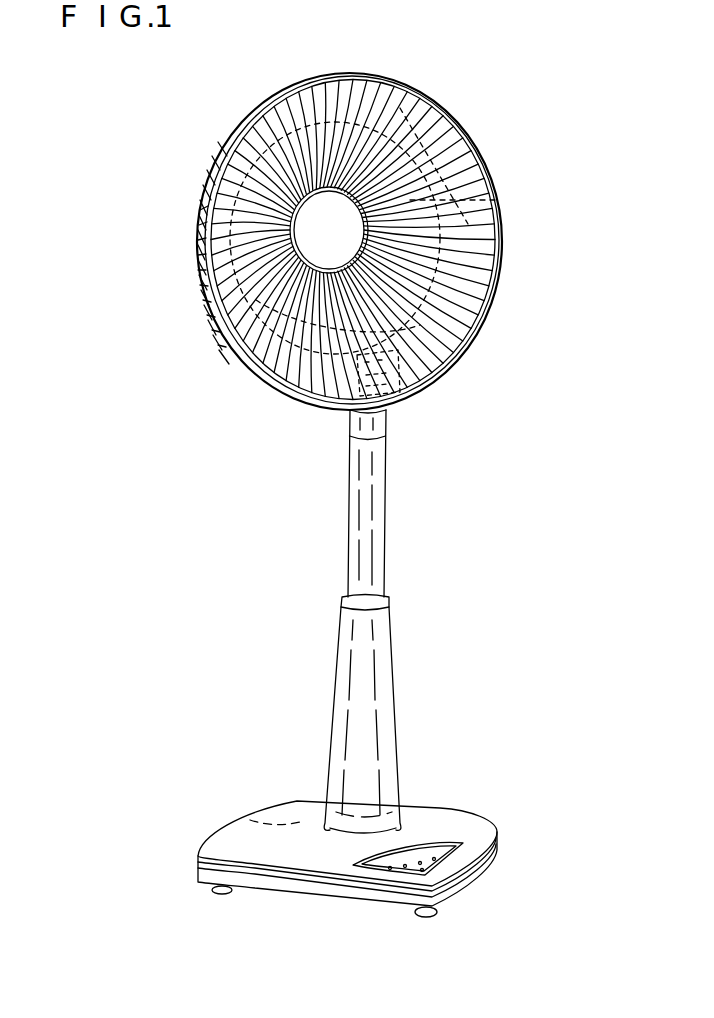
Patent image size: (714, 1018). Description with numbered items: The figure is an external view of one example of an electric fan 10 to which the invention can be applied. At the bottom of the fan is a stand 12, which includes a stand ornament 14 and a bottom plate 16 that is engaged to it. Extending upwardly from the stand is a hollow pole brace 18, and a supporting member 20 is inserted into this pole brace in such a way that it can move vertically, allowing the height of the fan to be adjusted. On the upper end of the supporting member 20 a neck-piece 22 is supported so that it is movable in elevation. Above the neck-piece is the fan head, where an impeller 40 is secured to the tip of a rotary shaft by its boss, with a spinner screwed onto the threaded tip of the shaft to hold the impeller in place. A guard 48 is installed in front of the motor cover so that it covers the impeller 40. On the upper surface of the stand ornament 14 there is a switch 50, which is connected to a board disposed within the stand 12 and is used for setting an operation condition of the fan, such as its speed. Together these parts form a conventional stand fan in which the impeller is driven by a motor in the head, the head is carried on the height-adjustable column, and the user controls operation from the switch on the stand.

The electric fan 10 is at (242, 476).
The stand 12 is at (446, 797).
The stand ornament 14 is at (288, 862).
The bottom plate 16 is at (389, 903).
The hollow pole brace 18 is at (388, 717).
The supporting member 20 is at (375, 515).
The neck-piece 22 is at (408, 396).
The impeller 40 is at (497, 201).
The guard 48 is at (437, 113).
The switch 50 is at (452, 843).